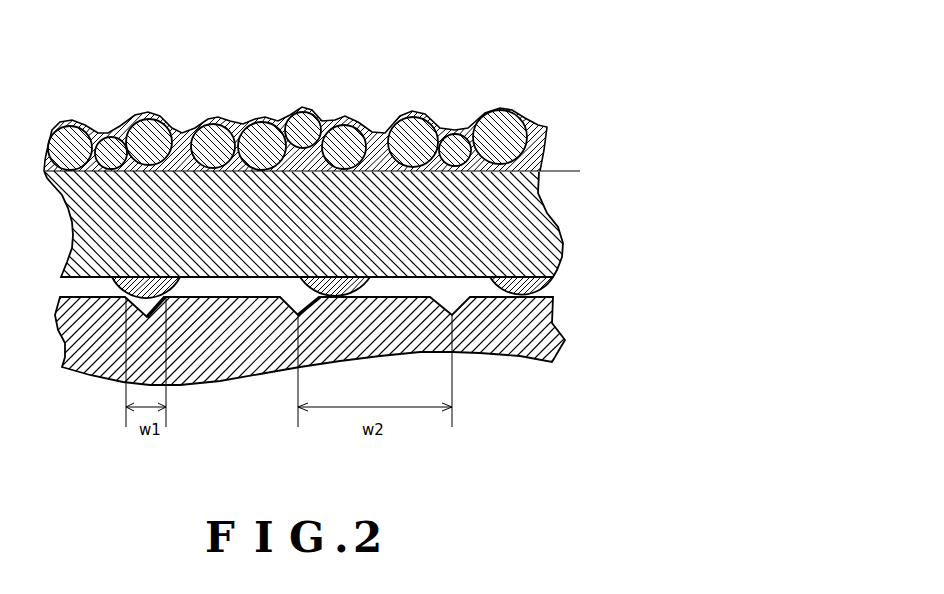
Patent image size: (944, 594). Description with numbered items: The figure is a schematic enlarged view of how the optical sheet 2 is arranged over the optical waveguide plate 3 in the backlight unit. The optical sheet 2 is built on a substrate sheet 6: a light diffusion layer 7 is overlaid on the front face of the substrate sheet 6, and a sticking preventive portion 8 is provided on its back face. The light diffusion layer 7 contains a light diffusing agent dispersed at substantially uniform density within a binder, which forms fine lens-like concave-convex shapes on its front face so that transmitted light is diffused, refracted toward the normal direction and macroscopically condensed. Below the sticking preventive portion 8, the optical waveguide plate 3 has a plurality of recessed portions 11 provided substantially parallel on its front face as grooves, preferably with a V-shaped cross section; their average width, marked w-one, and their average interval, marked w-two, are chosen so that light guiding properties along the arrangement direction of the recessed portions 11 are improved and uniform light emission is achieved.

The optical sheet 2 is at (326, 170).
The optical waveguide plate 3 is at (312, 315).
The substrate sheet 6 is at (549, 221).
The light diffusion layer 7 is at (553, 112).
The sticking preventive portion 8 is at (557, 285).
The recessed portion 11 is at (113, 287).